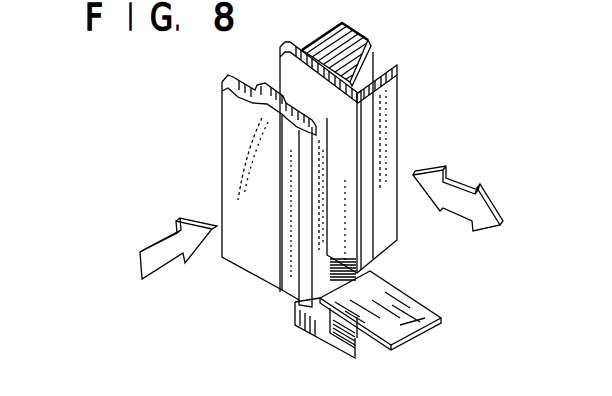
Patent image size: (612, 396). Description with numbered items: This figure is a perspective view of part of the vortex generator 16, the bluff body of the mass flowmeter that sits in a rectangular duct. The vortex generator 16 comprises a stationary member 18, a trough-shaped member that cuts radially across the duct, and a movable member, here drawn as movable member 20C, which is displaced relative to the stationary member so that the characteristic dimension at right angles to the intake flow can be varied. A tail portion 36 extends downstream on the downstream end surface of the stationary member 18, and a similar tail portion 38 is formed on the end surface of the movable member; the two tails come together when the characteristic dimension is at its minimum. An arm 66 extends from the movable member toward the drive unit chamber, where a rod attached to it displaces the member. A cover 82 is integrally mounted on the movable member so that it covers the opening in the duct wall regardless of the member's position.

The vortex generator 16 is at (160, 121).
The stationary member 18 is at (220, 106).
The tail portion 36 is at (368, 36).
The corner connector 20C is at (370, 108).
The tail portion 38 is at (383, 137).
The cover 82 is at (408, 307).
The arm 66 is at (343, 348).